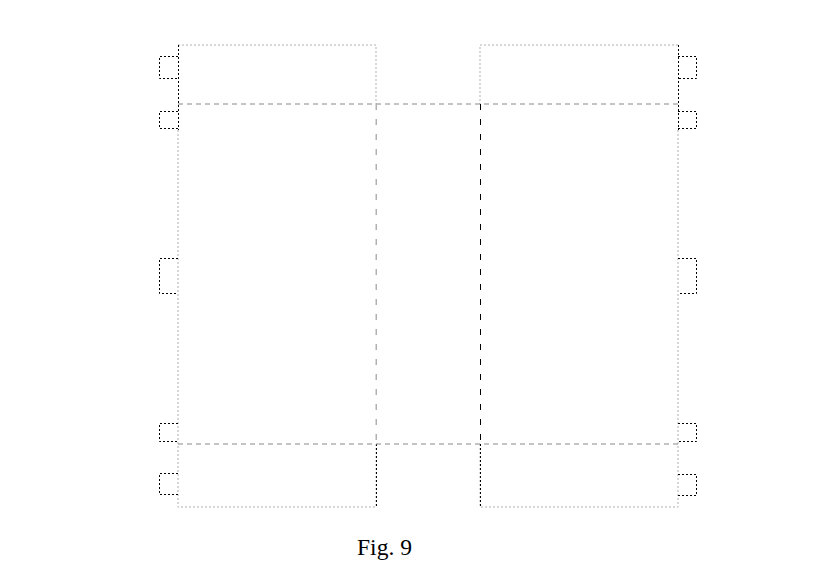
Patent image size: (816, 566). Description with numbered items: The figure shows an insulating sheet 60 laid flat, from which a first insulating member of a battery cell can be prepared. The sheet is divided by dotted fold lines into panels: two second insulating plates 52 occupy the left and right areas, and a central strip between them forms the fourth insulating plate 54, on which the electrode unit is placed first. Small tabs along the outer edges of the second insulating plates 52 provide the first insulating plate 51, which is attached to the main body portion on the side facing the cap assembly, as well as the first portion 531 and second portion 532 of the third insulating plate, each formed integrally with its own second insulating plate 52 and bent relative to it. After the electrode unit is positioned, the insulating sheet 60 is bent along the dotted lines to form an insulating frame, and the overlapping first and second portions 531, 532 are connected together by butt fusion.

The insulating sheet 60 is at (43, 44).
The first insulating plate 51 is at (165, 283).
The second insulating plate 52 is at (200, 345).
The first portion 531 is at (348, 74).
The second portion 532 is at (657, 85).
The fourth insulating plate 54 is at (430, 415).